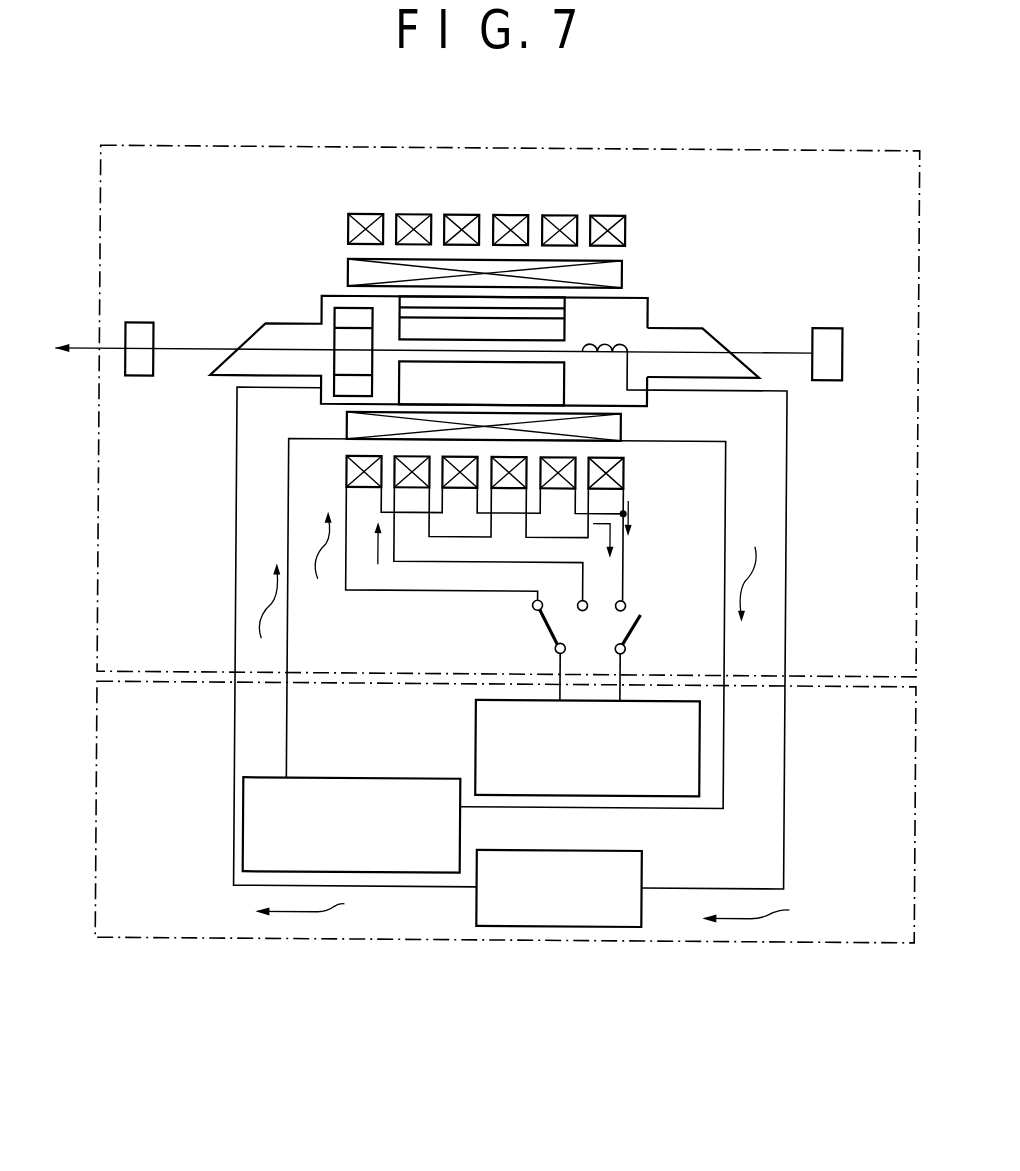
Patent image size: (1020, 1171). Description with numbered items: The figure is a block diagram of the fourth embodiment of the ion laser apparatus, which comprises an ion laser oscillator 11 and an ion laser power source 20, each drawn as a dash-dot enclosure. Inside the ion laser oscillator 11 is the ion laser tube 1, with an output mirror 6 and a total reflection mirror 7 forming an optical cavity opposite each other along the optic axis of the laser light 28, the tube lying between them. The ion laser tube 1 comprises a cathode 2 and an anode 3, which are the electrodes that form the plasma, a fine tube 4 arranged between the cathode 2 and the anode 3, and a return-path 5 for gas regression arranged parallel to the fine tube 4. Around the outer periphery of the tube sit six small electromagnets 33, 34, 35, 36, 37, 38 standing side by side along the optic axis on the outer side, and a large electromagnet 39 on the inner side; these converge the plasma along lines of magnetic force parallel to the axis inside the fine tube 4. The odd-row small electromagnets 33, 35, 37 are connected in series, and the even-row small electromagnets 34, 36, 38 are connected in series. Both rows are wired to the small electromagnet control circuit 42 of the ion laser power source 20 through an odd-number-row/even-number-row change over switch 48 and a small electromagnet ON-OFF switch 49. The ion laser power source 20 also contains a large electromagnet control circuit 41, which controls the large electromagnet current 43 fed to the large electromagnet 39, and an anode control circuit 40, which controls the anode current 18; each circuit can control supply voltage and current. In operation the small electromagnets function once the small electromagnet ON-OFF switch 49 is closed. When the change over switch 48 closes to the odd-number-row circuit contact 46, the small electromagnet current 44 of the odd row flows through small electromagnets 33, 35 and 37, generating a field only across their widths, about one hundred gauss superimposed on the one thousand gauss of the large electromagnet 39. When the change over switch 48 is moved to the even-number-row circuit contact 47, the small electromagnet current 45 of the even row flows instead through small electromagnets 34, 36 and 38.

The ion laser tube 1 is at (692, 327).
The cathode 2 is at (618, 343).
The anode 3 is at (333, 312).
The fine tube 4 is at (425, 347).
The return-path 5 is at (543, 313).
The output mirror 6 is at (138, 325).
The total reflection mirror 7 is at (825, 326).
The ion laser oscillator 11 is at (590, 146).
The anode current 18 is at (542, 907).
The ion laser power source 20 is at (600, 944).
The laser light 28 is at (84, 347).
The small electromagnet 33 is at (365, 215).
The small electromagnet 34 is at (417, 215).
The small electromagnet 35 is at (462, 215).
The small electromagnet 36 is at (510, 215).
The small electromagnet 37 is at (557, 215).
The small electromagnet 38 is at (607, 215).
The large electromagnet 39 is at (622, 275).
The anode control circuit 40 is at (645, 880).
The large electromagnet control circuit 41 is at (345, 779).
The small electromagnet control circuit 42 is at (477, 728).
The large electromagnet current 43 is at (511, 592).
The small electromagnet current of the odd-number-row 44 is at (605, 535).
The small electromagnet current of the even-number-row 45 is at (633, 512).
The odd-number-row circuit contact 46 is at (533, 605).
The even-number-row circuit contact 47 is at (583, 610).
The odd-number-row/even-number-row change over switch 48 is at (545, 628).
The small electromagnet ON-OFF switch 49 is at (640, 630).